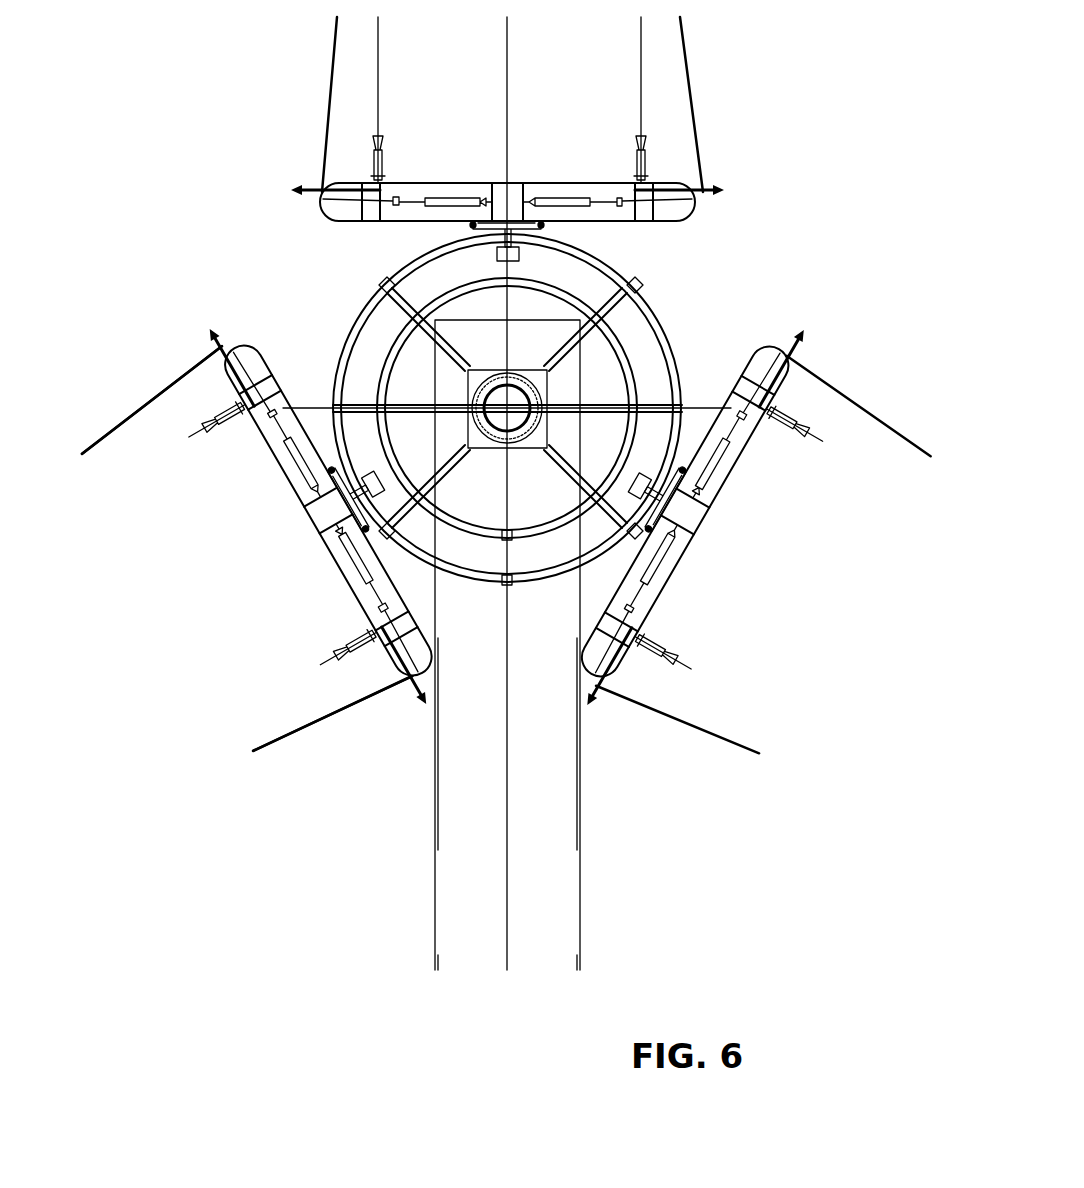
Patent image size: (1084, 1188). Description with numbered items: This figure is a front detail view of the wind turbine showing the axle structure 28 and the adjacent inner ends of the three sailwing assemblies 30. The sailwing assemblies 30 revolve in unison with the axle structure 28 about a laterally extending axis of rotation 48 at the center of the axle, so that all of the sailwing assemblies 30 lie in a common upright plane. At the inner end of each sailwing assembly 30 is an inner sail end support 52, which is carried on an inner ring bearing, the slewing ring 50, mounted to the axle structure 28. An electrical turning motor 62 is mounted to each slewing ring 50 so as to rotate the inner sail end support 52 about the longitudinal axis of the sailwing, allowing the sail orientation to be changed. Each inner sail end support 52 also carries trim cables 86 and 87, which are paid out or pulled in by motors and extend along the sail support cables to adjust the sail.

The axle structure 28 is at (650, 307).
The sailwing assembly 30 is at (372, 77).
The axis of rotation 48 is at (513, 420).
The slewing ring 50 is at (543, 225).
The inner sail end support 52 is at (420, 188).
The electrical turning motor 62 is at (493, 255).
The trim cable 86 is at (283, 748).
The trim cable 87 is at (158, 397).